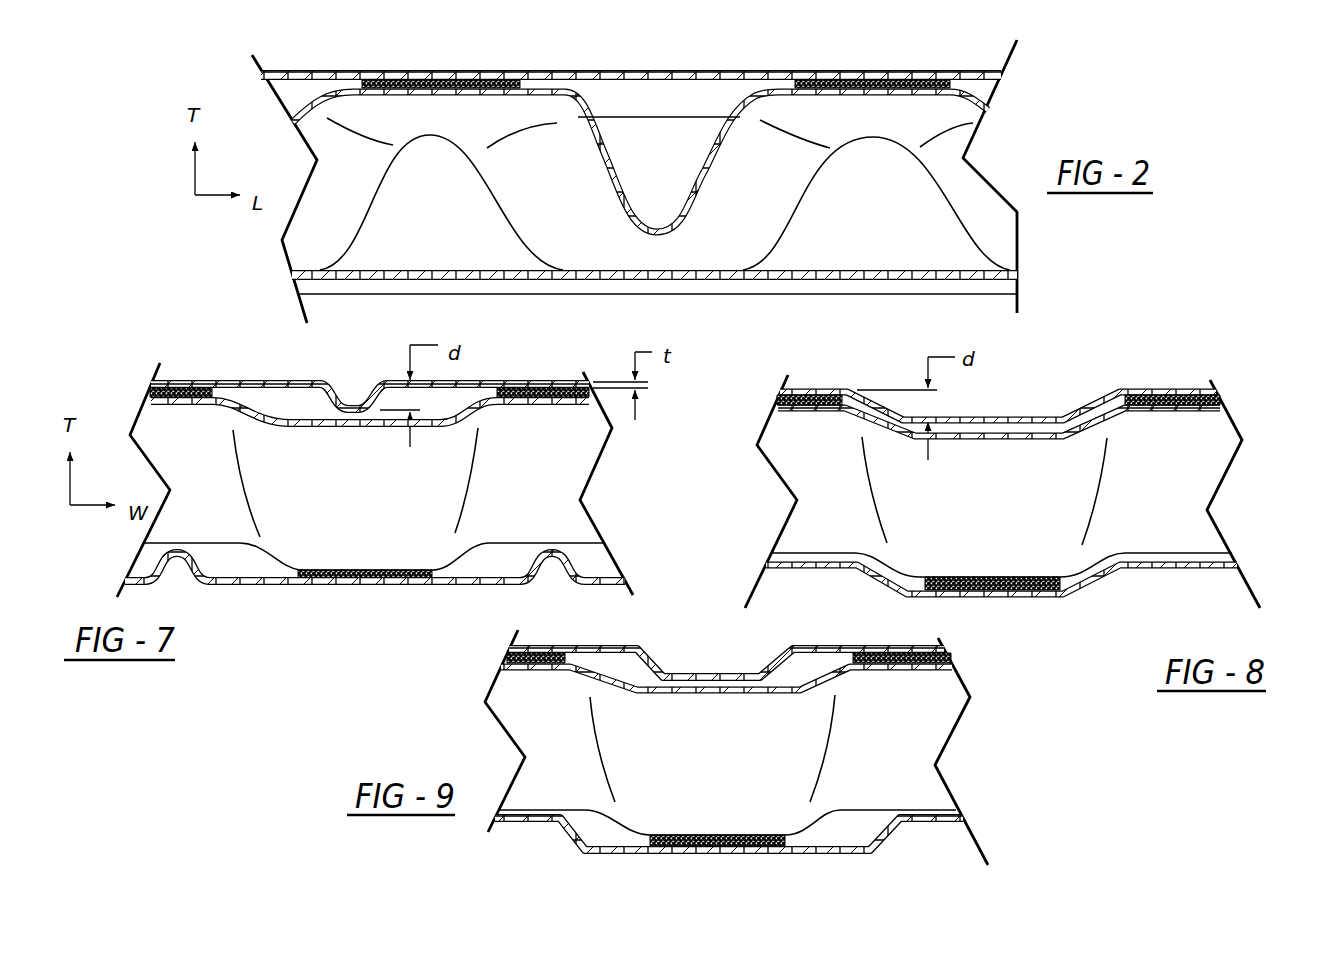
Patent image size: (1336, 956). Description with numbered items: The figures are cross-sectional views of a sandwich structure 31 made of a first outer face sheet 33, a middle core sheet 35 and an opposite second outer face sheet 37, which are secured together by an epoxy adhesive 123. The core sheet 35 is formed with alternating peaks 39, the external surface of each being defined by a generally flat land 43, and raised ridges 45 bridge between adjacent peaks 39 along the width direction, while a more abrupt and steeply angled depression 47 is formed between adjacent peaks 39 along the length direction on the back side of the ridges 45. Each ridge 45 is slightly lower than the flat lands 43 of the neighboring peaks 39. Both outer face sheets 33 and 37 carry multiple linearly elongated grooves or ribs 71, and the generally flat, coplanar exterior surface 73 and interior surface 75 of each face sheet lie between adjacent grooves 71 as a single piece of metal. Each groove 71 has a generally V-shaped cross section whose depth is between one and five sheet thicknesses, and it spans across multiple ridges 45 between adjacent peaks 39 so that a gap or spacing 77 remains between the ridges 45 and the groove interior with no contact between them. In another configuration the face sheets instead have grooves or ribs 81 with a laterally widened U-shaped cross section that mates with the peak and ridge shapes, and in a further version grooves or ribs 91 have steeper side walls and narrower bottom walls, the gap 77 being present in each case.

In FIG. 2, the sandwich structure 31 is at (1137, 120).
In FIG. 7, the sandwich structure 31 is at (134, 535).
In FIG. 8, the sandwich structure 31 is at (762, 392).
In FIG. 9, the sandwich structure 31 is at (992, 689).
In FIG. 2, the first outer face sheet 33 is at (962, 72).
In FIG. 7, the first outer face sheet 33 is at (523, 380).
In FIG. 8, the first outer face sheet 33 is at (808, 397).
In FIG. 9, the first outer face sheet 33 is at (888, 645).
In FIG. 2, the middle core sheet 35 is at (982, 212).
In FIG. 7, the middle core sheet 35 is at (553, 472).
In FIG. 8, the middle core sheet 35 is at (818, 473).
In FIG. 2, the second outer face sheet 37 is at (987, 283).
In FIG. 7, the second outer face sheet 37 is at (282, 587).
In FIG. 8, the second outer face sheet 37 is at (775, 570).
In FIG. 9, the second outer face sheet 37 is at (537, 820).
In FIG. 2, the peaks 39 is at (393, 98).
In FIG. 7, the peaks 39 is at (162, 408).
In FIG. 8, the peaks 39 is at (790, 416).
In FIG. 9, the peaks 39 is at (516, 670).
In FIG. 2, the flat land 43 is at (440, 88).
In FIG. 8, the flat land 43 is at (1152, 392).
In FIG. 7, the raised ridges 45 is at (337, 432).
In FIG. 8, the raised ridges 45 is at (998, 440).
In FIG. 7, the depression 47 is at (358, 570).
In FIG. 8, the depression 47 is at (988, 575).
In FIG. 9, the depression 47 is at (720, 833).
In FIG. 2, the grooves or ribs 71 is at (723, 97).
In FIG. 7, the grooves or ribs 71 is at (340, 403).
In FIG. 2, the exterior surface 73 is at (652, 70).
In FIG. 2, the interior surface 75 is at (627, 92).
In FIG. 7, the gap or spacing 77 is at (340, 416).
In FIG. 9, the gap or spacing 77 is at (655, 682).
In FIG. 8, the grooves or ribs 81 is at (972, 405).
In FIG. 9, the grooves or ribs 91 is at (723, 673).
In FIG. 2, the epoxy adhesive 123 is at (527, 84).
In FIG. 7, the epoxy adhesive 123 is at (190, 392).
In FIG. 8, the epoxy adhesive 123 is at (1200, 396).
In FIG. 9, the epoxy adhesive 123 is at (948, 658).